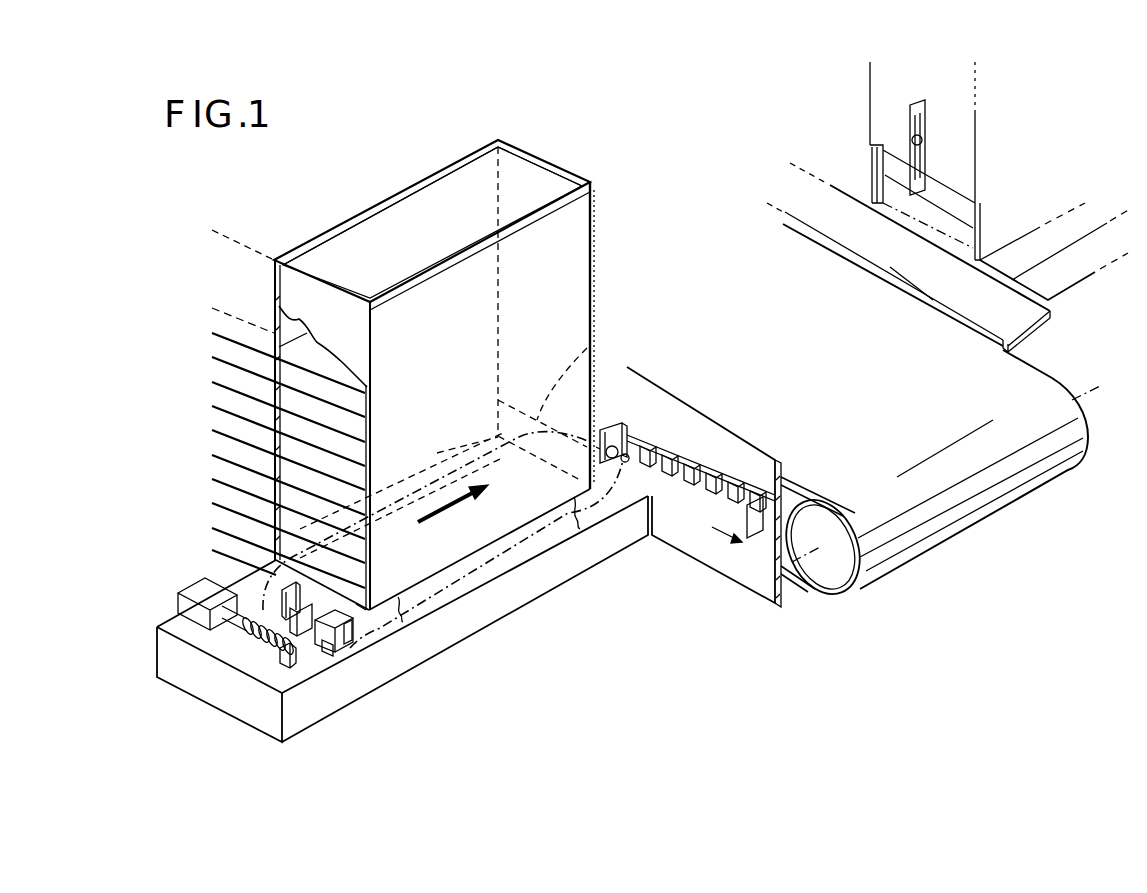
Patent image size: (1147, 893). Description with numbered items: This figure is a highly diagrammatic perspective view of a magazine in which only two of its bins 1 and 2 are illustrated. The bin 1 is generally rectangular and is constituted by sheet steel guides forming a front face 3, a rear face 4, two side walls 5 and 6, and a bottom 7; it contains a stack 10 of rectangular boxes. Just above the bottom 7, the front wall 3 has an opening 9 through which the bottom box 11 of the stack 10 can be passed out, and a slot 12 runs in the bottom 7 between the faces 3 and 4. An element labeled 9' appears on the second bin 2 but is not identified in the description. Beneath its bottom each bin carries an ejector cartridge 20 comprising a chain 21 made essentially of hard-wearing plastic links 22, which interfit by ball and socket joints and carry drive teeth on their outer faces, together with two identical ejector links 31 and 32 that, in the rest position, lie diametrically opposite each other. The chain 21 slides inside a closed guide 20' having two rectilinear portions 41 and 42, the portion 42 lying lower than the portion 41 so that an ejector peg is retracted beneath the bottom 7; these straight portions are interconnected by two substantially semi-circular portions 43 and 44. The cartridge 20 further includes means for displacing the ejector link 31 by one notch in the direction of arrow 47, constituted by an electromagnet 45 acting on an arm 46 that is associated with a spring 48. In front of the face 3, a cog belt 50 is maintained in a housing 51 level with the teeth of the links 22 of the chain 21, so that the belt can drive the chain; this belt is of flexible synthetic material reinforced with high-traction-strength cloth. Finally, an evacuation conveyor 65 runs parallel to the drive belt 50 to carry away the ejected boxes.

The bin 1 is at (514, 134).
The bin 2 is at (893, 92).
The front face 3 is at (530, 180).
The rear face 4 is at (310, 292).
The side wall 5 is at (428, 197).
The side wall 6 is at (565, 238).
The bottom 7 is at (414, 613).
The opening 9 is at (576, 360).
The guide plate 9' is at (865, 147).
The stack of rectangular boxes 10 is at (300, 468).
The bottom box 11 is at (362, 606).
The slot 12 is at (438, 478).
The ejector cartridge 20 is at (402, 619).
The closed guide 20' is at (520, 565).
The chain 21 is at (428, 638).
The link 22 is at (350, 655).
The ejector link 31 is at (266, 588).
The ejector link 32 is at (627, 442).
The rectilinear portion 41 is at (390, 500).
The rectilinear portion 42 is at (493, 563).
The semi-circular portion 43 is at (562, 428).
The semi-circular portion 44 is at (236, 600).
The electromagnet 45 is at (178, 590).
The arm 46 is at (270, 660).
The arrow 47 is at (444, 548).
The spring 48 is at (243, 625).
The cog belt 50 is at (713, 517).
The housing 51 is at (714, 448).
The evacuation conveyor 65 is at (893, 453).